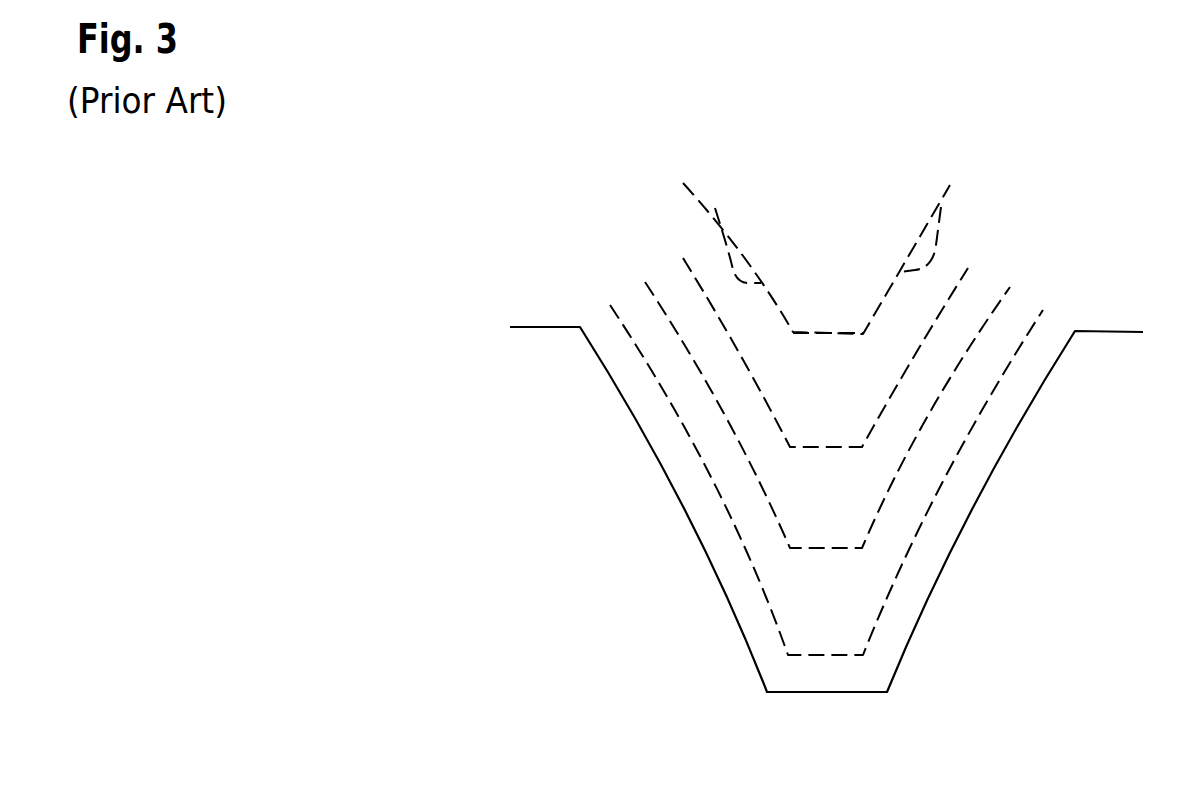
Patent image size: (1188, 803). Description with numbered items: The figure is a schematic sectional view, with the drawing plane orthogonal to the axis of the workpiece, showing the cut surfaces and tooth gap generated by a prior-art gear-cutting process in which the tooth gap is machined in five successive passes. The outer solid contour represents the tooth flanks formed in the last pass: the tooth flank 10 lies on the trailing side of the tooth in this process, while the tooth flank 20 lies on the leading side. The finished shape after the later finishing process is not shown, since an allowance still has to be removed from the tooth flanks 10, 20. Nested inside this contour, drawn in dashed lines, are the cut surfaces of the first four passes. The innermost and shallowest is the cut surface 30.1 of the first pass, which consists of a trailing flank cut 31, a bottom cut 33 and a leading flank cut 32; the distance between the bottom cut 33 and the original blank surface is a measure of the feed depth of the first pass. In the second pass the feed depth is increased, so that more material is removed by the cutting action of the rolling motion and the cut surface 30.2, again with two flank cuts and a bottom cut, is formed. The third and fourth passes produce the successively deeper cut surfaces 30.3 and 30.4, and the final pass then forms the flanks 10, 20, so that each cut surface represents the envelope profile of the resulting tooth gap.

The tooth flank 10 is at (710, 562).
The tooth flank 20 is at (943, 562).
The cut surface 30.1 is at (878, 277).
The cut surface 30.2 is at (950, 247).
The cut surface 30.3 is at (1015, 248).
The cut surface 30.4 is at (1083, 248).
The flank cut 31 is at (704, 214).
The flank cut 32 is at (932, 210).
The bottom cut 33 is at (823, 336).